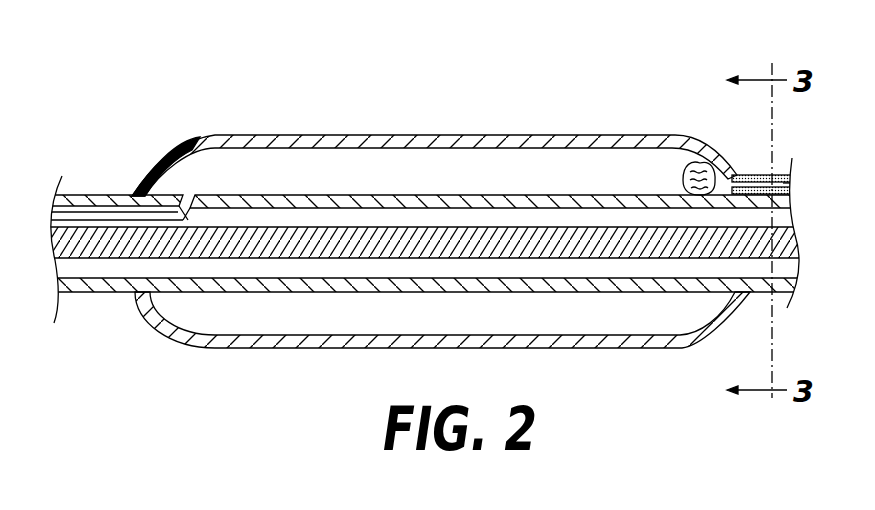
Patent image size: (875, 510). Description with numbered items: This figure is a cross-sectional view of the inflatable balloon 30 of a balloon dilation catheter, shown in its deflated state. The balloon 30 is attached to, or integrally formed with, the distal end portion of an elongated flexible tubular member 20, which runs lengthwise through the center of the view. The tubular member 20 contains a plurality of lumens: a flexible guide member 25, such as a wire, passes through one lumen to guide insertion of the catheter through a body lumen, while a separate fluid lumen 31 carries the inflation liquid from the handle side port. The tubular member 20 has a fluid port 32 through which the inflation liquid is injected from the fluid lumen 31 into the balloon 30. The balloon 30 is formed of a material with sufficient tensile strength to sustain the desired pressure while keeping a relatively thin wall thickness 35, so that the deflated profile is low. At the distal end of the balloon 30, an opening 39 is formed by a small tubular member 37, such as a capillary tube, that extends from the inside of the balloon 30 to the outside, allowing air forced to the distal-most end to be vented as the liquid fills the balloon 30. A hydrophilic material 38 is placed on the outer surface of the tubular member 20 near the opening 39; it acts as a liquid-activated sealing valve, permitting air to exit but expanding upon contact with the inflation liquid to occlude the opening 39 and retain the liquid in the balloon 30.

The elongated flexible tubular member 20 is at (225, 293).
The flexible guide member 25 is at (158, 258).
The inflatable balloon 30 is at (441, 228).
The fluid lumen 31 is at (85, 218).
The fluid port 32 is at (191, 200).
The wall thickness 35 is at (365, 349).
The tubular member 37 is at (745, 173).
The hydrophilic material 38 is at (695, 165).
The opening 39 is at (792, 183).